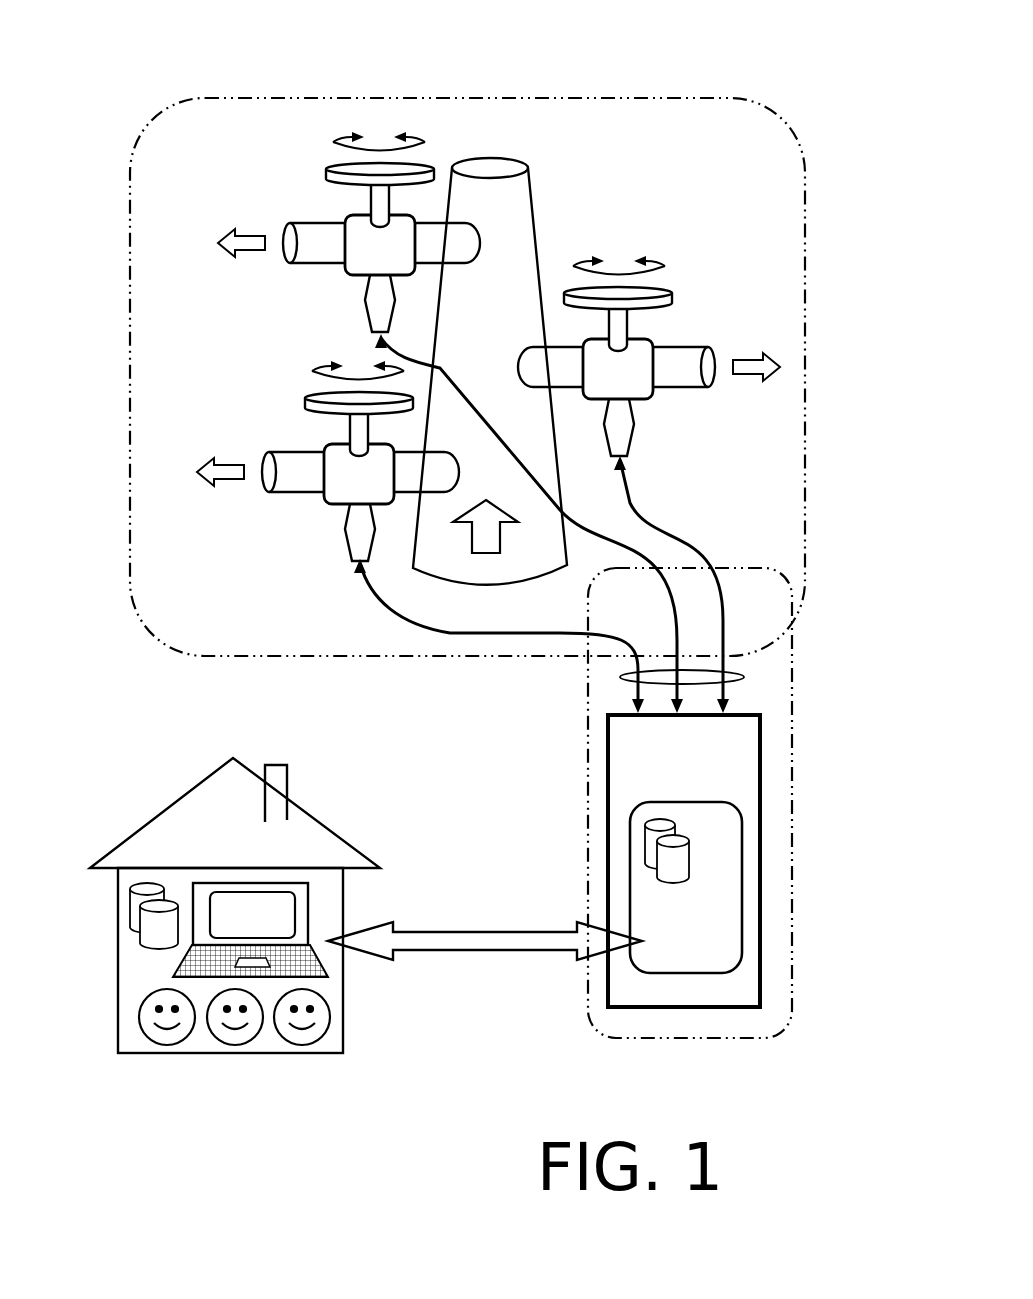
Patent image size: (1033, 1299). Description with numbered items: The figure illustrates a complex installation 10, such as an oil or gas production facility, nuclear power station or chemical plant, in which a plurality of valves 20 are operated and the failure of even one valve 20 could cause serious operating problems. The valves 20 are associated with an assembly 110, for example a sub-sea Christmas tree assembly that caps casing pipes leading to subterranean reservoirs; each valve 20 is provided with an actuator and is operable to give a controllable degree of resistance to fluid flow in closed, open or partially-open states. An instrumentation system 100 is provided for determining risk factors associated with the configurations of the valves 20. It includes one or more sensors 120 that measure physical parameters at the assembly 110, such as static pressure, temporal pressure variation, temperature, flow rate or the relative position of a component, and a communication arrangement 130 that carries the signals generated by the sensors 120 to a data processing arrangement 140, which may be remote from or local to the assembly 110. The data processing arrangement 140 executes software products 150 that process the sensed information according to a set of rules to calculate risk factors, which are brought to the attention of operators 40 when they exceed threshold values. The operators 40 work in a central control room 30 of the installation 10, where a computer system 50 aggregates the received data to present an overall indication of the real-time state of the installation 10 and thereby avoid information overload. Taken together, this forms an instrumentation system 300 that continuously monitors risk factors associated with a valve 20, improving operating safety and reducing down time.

The complex installation 10 is at (228, 73).
The valve 20 is at (395, 261).
The central control room 30 is at (237, 835).
The operators 40 is at (233, 1022).
The computer system 50 is at (268, 926).
The instrumentation system 100 is at (698, 775).
The assembly 110 is at (510, 320).
The sensor 120 is at (373, 308).
The communication arrangement 130 is at (620, 677).
The data processing arrangement 140 is at (702, 927).
The software product 150 is at (673, 860).
The instrumentation system 300 is at (522, 772).